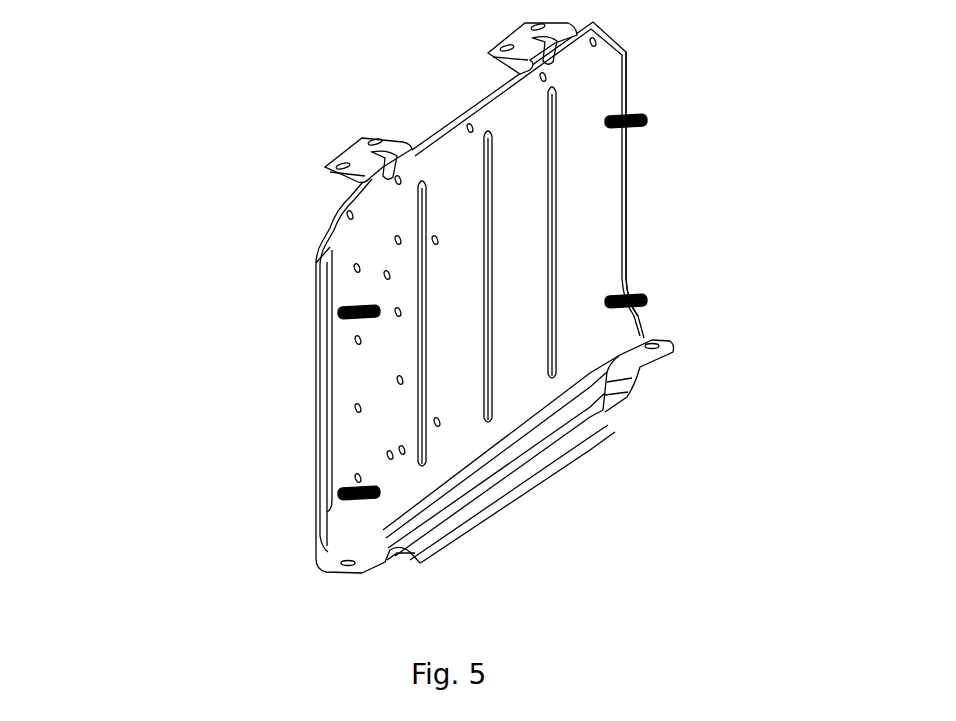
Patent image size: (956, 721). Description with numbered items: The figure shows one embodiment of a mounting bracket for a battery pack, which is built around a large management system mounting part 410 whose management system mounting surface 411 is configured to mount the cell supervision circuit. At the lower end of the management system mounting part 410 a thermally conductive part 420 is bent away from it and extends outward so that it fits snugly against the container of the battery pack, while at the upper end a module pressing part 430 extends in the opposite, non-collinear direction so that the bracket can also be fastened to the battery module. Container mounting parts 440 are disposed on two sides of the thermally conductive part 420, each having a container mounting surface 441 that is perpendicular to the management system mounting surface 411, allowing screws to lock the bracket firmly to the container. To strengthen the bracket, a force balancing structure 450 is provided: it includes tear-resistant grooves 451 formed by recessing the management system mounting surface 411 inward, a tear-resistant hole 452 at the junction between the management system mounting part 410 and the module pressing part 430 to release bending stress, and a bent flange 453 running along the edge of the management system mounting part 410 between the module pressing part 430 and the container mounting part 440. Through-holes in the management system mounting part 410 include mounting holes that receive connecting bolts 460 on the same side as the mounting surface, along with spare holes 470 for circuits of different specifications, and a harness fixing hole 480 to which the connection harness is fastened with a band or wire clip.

The management system mounting part 410 is at (475, 100).
The management system mounting surface 411 is at (590, 192).
The thermally conductive part 420 is at (570, 457).
The module pressing part 430 is at (357, 145).
The container mounting part 440 is at (677, 353).
The container mounting surface 441 is at (667, 357).
The force balancing structure 450 is at (172, 192).
The tear-resistant groove 451 is at (420, 259).
The tear-resistant hole 452 is at (360, 173).
The bent flange 453 is at (323, 343).
The connecting bolt 460 is at (623, 120).
The spare holes 470 is at (436, 243).
The harness fixing hole 480 is at (355, 403).